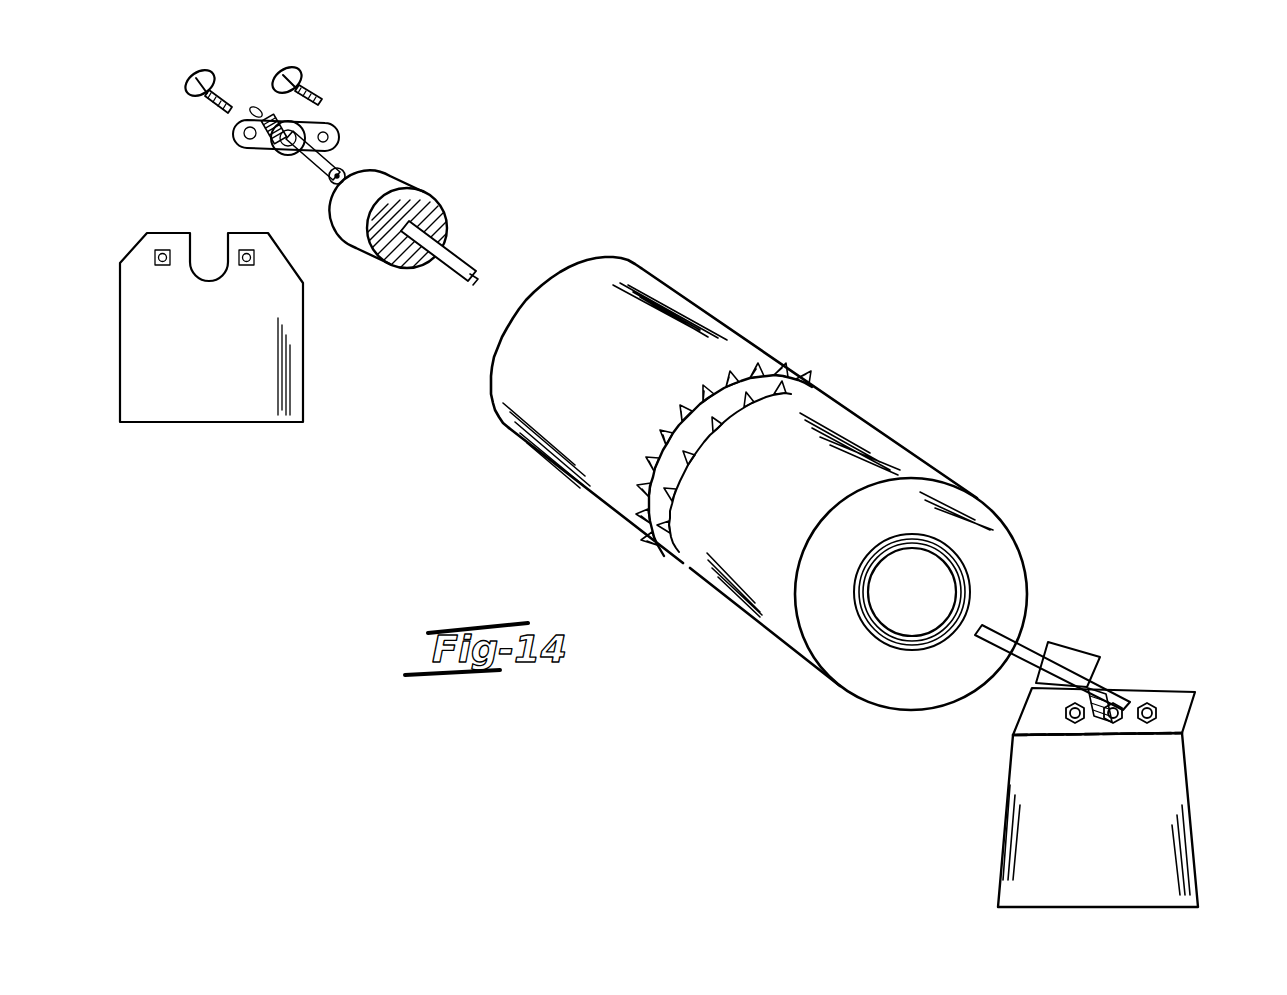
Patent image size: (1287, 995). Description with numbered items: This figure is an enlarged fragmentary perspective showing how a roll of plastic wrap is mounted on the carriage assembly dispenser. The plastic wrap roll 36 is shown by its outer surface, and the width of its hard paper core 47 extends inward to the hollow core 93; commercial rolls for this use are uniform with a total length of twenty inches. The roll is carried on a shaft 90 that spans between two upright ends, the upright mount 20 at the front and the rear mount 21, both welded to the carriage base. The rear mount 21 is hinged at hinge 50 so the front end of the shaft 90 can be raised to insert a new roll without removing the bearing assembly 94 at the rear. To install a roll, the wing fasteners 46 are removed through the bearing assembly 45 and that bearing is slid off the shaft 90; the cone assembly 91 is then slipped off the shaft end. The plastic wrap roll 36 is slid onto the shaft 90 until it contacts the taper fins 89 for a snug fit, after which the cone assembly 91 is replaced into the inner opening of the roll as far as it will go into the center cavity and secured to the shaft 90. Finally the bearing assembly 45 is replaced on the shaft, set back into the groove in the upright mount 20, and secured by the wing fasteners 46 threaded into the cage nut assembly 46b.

The upright end 20 is at (202, 410).
The rear mount upright end 21 is at (1047, 780).
The plastic wrap roll 36 is at (740, 615).
The bearing assembly 45 is at (290, 120).
The wing fasteners 46 is at (270, 88).
The cage nut assembly 46b is at (172, 266).
The hard paper core 47 is at (863, 630).
The hinge 50 is at (1040, 740).
The taper fins 89 is at (1075, 655).
The shaft 90 is at (470, 270).
The cone assembly 91 is at (418, 197).
The hollow core 93 is at (920, 620).
The bearing assembly 94 is at (1160, 713).